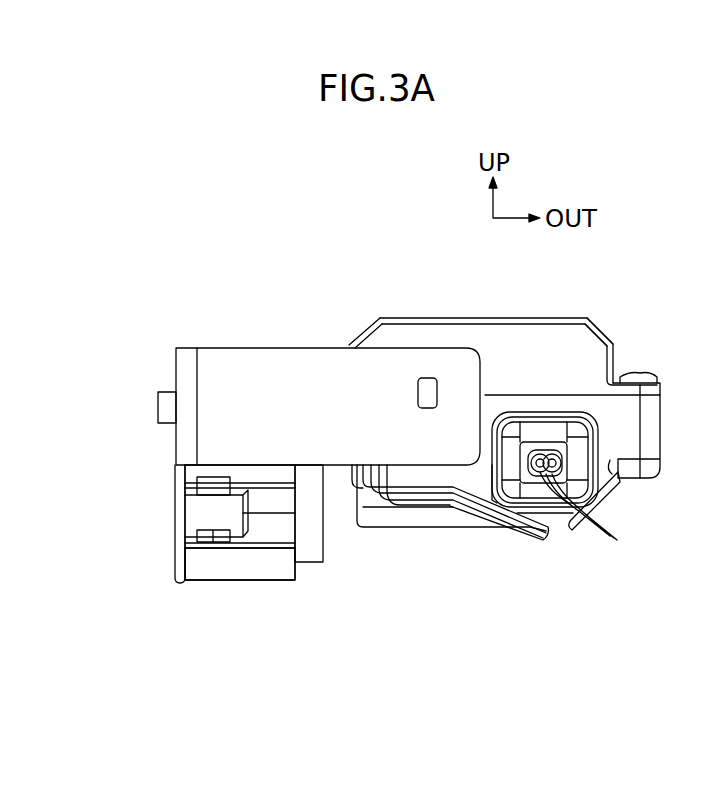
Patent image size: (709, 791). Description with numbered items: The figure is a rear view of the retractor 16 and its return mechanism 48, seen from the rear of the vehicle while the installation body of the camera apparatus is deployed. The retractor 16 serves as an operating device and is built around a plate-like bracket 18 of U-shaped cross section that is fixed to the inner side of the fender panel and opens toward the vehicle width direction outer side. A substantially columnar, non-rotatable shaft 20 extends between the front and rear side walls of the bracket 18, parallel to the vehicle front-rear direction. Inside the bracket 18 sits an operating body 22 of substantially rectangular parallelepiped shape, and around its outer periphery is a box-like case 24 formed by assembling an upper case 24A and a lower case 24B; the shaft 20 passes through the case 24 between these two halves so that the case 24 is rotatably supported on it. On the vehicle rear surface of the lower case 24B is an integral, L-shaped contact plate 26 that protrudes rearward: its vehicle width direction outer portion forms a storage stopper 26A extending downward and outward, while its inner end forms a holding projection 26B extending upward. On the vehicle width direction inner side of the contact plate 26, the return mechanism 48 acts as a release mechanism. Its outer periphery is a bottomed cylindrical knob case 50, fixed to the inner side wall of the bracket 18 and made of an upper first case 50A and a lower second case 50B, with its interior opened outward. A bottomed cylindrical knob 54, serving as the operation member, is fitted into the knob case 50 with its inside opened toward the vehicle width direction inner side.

The retractor 16 is at (248, 278).
The bracket 18 is at (268, 348).
The shaft 20 is at (417, 396).
The operating body 22 is at (382, 318).
The case 24 is at (588, 320).
The upper case 24A is at (607, 338).
The lower case 24B is at (624, 480).
The contact plate 26 is at (430, 528).
The storage stopper 26A is at (487, 528).
The holding projection 26B is at (358, 488).
The return mechanism 48 is at (223, 582).
The knob case 50 is at (267, 580).
The first case 50A is at (187, 477).
The second case 50B is at (202, 562).
The knob 54 is at (310, 563).